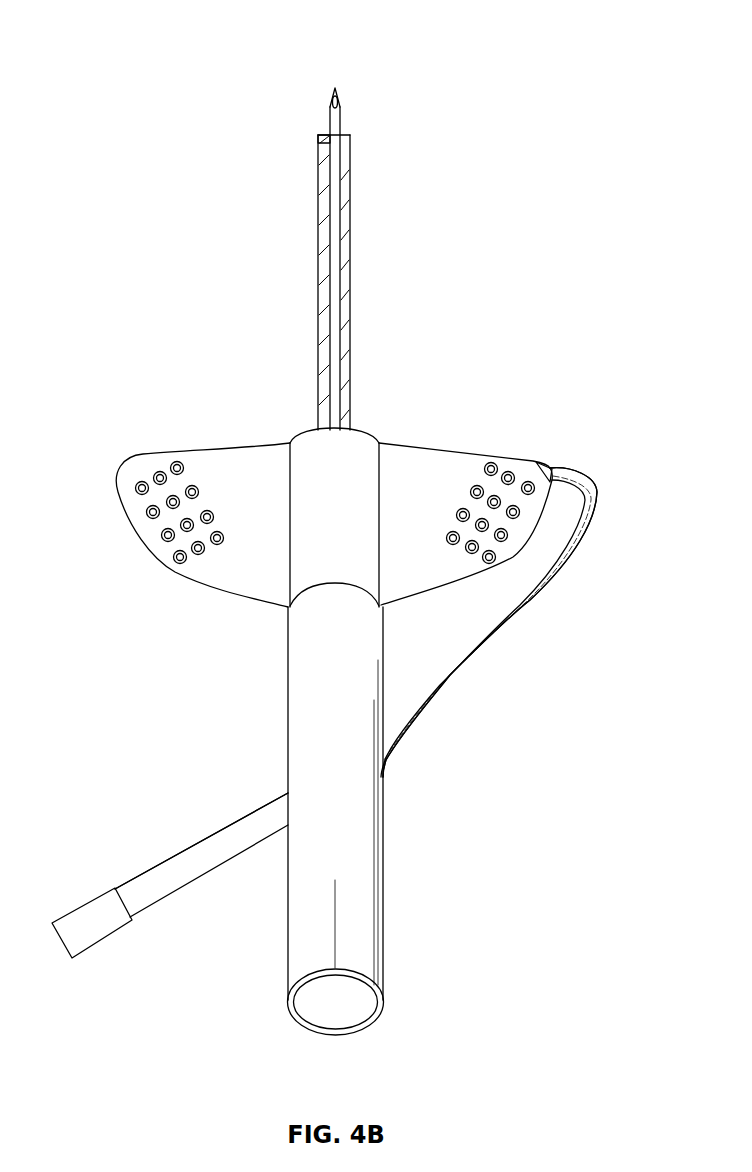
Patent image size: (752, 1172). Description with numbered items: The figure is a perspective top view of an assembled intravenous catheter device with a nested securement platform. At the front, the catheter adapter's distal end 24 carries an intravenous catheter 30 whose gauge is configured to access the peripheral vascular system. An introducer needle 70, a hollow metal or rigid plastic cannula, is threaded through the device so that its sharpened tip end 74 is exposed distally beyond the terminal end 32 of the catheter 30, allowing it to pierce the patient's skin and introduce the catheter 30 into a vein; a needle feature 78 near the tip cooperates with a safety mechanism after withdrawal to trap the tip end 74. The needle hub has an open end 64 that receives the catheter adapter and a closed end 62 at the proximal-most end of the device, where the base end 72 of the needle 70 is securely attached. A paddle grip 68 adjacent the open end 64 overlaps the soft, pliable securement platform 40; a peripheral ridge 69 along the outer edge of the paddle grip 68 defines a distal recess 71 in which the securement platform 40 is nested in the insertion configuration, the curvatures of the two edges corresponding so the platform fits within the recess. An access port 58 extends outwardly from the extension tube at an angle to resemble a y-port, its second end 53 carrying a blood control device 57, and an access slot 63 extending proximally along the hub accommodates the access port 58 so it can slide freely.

The distal end 24 is at (365, 433).
The intravenous catheter 30 is at (352, 251).
The terminal end 32 is at (345, 132).
The securement platform 40 is at (562, 474).
The second end 53 is at (190, 888).
The blood control device 57 is at (100, 946).
The access port 58 is at (178, 858).
The closed end 62 is at (384, 989).
The access slot 63 is at (288, 735).
The open end 64 is at (326, 582).
The paddle grip 68 is at (507, 620).
The peripheral ridge 69 is at (413, 660).
The introducer needle 70 is at (323, 176).
The distal recess 71 is at (548, 467).
The base end 72 is at (345, 1015).
The tip end 74 is at (335, 86).
The needle feature 78 is at (328, 136).